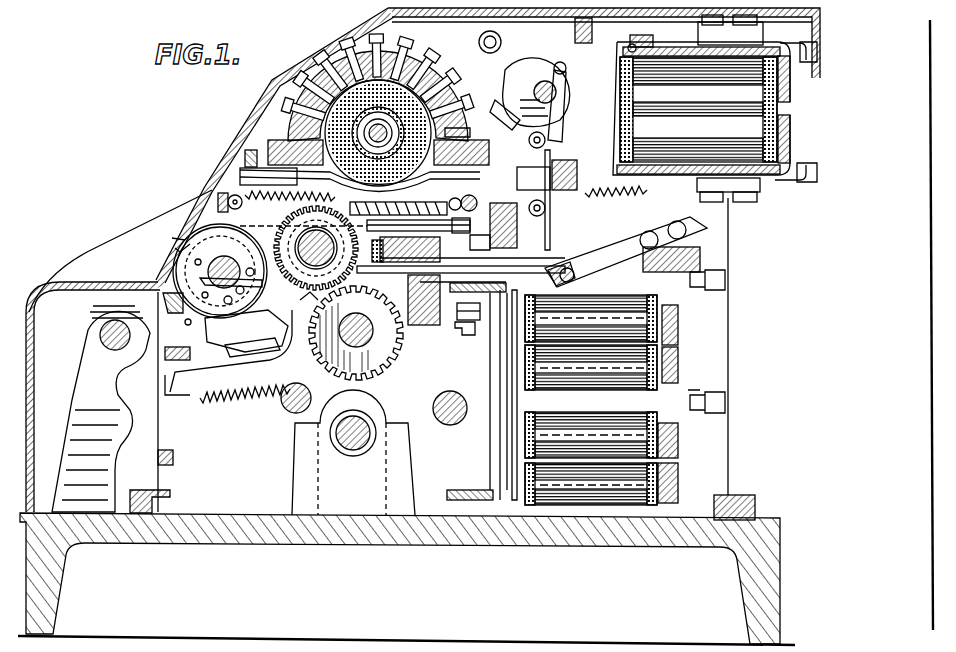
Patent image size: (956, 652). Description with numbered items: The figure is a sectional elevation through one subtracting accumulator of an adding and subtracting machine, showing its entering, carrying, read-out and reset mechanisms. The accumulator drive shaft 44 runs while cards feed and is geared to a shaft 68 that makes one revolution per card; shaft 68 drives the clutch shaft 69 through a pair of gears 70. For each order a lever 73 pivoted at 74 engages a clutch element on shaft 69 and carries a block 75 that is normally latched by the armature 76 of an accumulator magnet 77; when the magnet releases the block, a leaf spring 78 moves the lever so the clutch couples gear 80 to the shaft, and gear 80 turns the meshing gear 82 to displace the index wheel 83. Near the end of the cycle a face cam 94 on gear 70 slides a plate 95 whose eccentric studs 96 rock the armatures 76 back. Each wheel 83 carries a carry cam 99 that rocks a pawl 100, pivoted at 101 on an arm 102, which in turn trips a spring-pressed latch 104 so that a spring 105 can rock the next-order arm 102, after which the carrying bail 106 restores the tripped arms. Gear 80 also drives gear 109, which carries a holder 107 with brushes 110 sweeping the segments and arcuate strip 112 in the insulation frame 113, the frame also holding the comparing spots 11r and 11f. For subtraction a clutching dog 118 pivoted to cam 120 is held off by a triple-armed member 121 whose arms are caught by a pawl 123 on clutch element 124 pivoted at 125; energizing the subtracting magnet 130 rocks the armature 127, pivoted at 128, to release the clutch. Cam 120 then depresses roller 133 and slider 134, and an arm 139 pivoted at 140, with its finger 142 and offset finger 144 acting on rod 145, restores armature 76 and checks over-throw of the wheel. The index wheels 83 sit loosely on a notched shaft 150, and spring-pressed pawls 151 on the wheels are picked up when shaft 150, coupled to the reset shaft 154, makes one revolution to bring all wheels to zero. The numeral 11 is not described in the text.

The rotor assembly 11 is at (405, 80).
The front spot 11f is at (293, 120).
The rear spot 11r is at (460, 132).
The insulation frame 113 is at (386, 45).
The gear 109 is at (247, 182).
The spring 105 is at (213, 207).
The gear 82 is at (180, 238).
The shaft 150 is at (212, 267).
The spring-pressed pawl 151 is at (231, 265).
The accumulator index wheel 83 is at (170, 313).
The reset shaft 154 is at (100, 330).
The carry cam 99 is at (188, 320).
The pivot 101 is at (235, 327).
The carrying bail 106 is at (193, 349).
The arm 102 is at (253, 350).
The gears 70 is at (236, 352).
The spring-pressed latch 104 is at (222, 405).
The gear 80 is at (302, 307).
The pawl 100 is at (311, 248).
The clutch shaft 69 is at (318, 262).
The face cam 94 is at (356, 333).
The shaft 68 is at (357, 348).
The pivot 74 is at (413, 300).
The lever 73 is at (461, 262).
The block 75 is at (472, 259).
The horizontally slidable rod 145 is at (423, 249).
The offset finger 144 is at (428, 240).
The pivot 140 is at (359, 207).
The slider 134 is at (533, 200).
The roller 133 is at (553, 140).
The clutch element 124 is at (553, 179).
The arm 139 is at (626, 252).
The spring-pressed pivoted finger 142 is at (560, 268).
The leaf spring 78 is at (655, 246).
The eccentric studs 96 is at (478, 312).
The sliding plate 95 is at (445, 335).
The armature 76 is at (507, 367).
The accumulator magnet 77 is at (575, 362).
The accumulator drive shaft 44 is at (355, 440).
The cam 120 is at (507, 65).
The clutching dog 118 is at (503, 70).
The triple-armed member 121 is at (498, 100).
The brushes 110 is at (378, 133).
The holder 107 is at (479, 110).
The arcuate conducting strip 112 is at (360, 179).
The magnet armature 127 is at (591, 39).
The pawl 123 is at (578, 100).
The pivot 128 is at (692, 108).
The subtracting magnet 130 is at (715, 107).
The pivot 125 is at (620, 194).